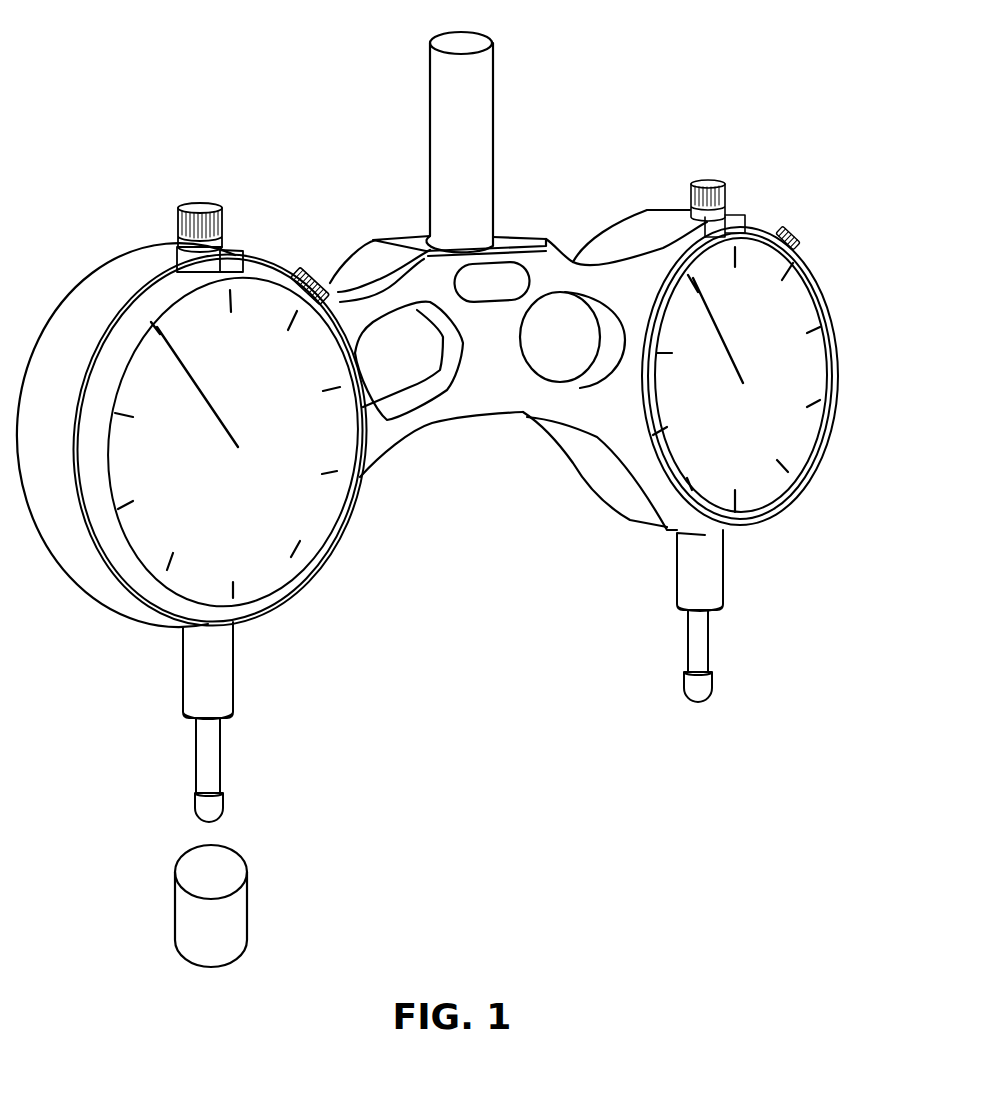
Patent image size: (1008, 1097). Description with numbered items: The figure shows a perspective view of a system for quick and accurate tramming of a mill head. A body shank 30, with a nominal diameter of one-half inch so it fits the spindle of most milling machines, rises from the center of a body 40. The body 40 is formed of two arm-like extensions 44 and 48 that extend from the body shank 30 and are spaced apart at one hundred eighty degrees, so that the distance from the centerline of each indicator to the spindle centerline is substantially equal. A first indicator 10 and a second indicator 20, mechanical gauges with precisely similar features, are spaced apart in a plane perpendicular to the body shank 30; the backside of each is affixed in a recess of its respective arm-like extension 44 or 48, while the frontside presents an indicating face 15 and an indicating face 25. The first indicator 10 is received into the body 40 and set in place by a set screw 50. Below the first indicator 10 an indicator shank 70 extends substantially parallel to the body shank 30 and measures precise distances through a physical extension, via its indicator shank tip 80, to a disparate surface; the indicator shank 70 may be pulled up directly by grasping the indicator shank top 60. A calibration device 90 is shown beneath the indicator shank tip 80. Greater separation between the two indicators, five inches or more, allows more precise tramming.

The first indicator 10 is at (283, 593).
The indicating face 15 is at (303, 503).
The second indicator 20 is at (825, 422).
The indicating face 25 is at (757, 443).
The body shank 30 is at (483, 95).
The body 40 is at (513, 230).
The arm-like extension 44 is at (137, 268).
The arm-like extension 48 is at (748, 220).
The set screw 50 is at (312, 270).
The indicator shank top 60 is at (200, 203).
The indicator shank 70 is at (218, 658).
The indicator shank tip 80 is at (200, 792).
The calibration device 90 is at (223, 913).